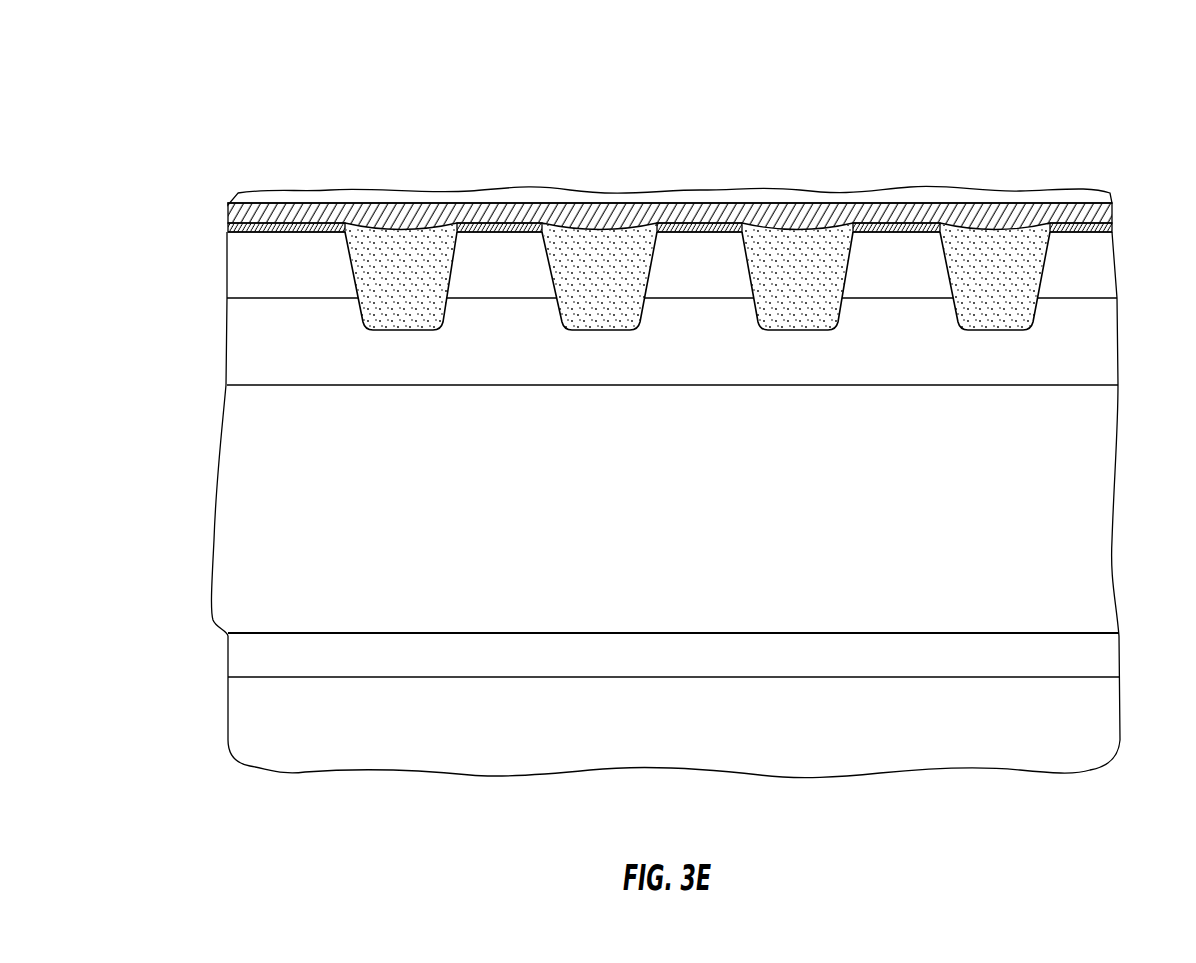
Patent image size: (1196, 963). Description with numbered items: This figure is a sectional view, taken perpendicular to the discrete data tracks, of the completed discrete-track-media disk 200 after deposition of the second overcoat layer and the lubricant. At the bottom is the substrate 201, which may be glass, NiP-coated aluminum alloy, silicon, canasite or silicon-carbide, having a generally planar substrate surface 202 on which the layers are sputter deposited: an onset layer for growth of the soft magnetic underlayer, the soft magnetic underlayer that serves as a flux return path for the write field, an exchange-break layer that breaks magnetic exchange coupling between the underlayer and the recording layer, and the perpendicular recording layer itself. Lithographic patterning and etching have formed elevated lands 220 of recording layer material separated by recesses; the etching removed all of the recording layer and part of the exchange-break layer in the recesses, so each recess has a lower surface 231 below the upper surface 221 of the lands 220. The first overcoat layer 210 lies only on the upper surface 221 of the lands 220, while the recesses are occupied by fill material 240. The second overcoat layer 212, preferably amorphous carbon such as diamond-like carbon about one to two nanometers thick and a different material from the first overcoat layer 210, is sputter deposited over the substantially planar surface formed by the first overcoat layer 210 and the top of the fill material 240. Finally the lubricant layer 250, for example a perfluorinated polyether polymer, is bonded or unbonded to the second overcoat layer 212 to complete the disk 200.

The disk 200 is at (288, 52).
The substrate 201 is at (1107, 722).
The substrate surface 202 is at (1107, 676).
The first overcoat layer 210 is at (313, 228).
The second overcoat layer 212 is at (277, 208).
The lands 220 is at (315, 293).
The upper surface 221 is at (279, 234).
The lower surface 231 is at (393, 330).
The fill material 240 is at (393, 253).
The lubricant layer 250 is at (1073, 193).